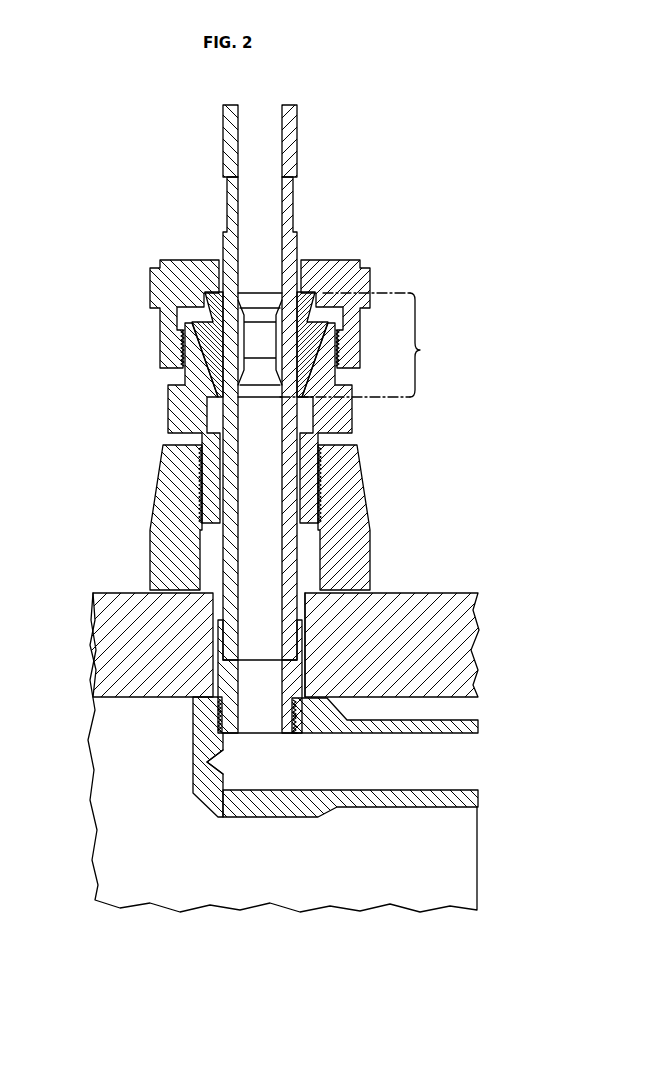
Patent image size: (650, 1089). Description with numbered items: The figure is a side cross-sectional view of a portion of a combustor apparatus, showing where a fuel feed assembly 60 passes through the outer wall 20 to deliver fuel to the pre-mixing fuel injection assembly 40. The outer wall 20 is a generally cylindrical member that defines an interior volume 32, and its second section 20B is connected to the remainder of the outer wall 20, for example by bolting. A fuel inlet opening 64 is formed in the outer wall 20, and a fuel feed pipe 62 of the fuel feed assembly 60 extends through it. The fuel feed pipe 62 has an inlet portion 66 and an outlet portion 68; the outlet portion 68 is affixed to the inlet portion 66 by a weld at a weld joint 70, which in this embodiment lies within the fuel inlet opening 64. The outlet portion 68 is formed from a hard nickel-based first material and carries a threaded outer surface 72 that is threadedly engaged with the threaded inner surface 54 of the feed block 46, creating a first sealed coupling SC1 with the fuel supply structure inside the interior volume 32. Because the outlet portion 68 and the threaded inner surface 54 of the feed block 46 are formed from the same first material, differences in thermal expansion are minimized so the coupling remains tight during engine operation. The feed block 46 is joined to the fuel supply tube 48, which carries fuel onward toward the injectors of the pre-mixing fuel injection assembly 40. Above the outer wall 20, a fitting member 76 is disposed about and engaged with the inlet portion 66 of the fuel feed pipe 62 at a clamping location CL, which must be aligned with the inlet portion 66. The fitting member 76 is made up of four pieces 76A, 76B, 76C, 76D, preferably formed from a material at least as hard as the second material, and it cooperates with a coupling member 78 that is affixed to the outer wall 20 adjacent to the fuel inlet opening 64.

The outer wall 20 is at (460, 636).
The second section of the outer wall 20B is at (107, 632).
The interior volume 32 is at (116, 713).
The pre-mixing fuel injection assembly 40 is at (208, 812).
The feed block 46 is at (206, 780).
The fuel supply tube 48 is at (402, 803).
The threaded inner surface 54 is at (240, 736).
The fuel feed assembly 60 is at (267, 382).
The fuel feed pipe 62 is at (226, 241).
The fuel inlet opening 64 is at (305, 650).
The inlet portion 66 is at (296, 140).
The outlet portion 68 is at (222, 670).
The weld joint 70 is at (233, 657).
The threaded outer surface 72 is at (297, 729).
The fitting member 76 is at (267, 425).
The fitting member piece 76A is at (343, 414).
The fitting member piece 76B is at (306, 351).
The fitting member piece 76C is at (260, 327).
The fitting member piece 76D is at (360, 283).
The coupling member 78 is at (353, 498).
The first sealed coupling SC1 is at (221, 722).
The clamping location CL is at (362, 345).